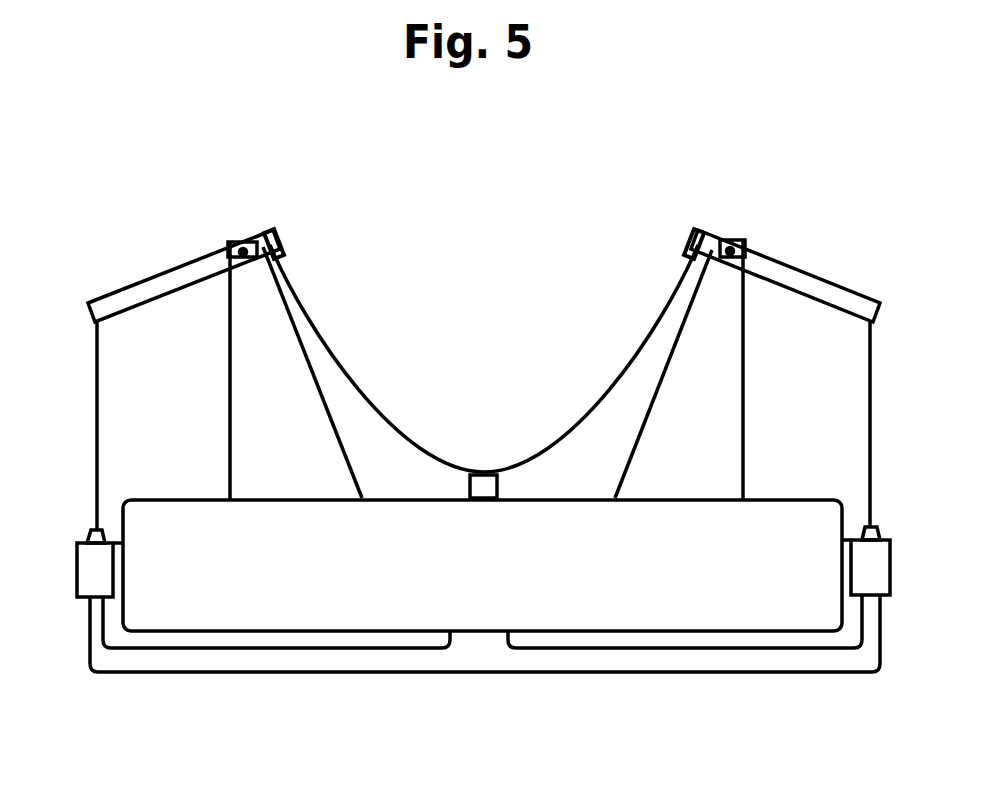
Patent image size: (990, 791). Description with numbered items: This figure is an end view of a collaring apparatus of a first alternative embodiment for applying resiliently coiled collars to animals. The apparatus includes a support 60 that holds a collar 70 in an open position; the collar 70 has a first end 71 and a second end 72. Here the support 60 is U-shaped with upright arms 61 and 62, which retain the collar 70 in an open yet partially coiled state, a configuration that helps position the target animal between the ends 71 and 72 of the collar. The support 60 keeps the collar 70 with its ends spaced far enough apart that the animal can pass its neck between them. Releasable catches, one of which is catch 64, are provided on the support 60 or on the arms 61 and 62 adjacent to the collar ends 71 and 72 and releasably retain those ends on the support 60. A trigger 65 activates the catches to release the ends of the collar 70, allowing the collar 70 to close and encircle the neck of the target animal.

The support 60 is at (843, 508).
The upright arm 61 is at (248, 392).
The upright arm 62 is at (727, 417).
The releasable catch 64 is at (707, 232).
The trigger 65 is at (500, 485).
The collar 70 is at (400, 432).
The first end of collar 71 is at (285, 277).
The second end of collar 72 is at (693, 267).